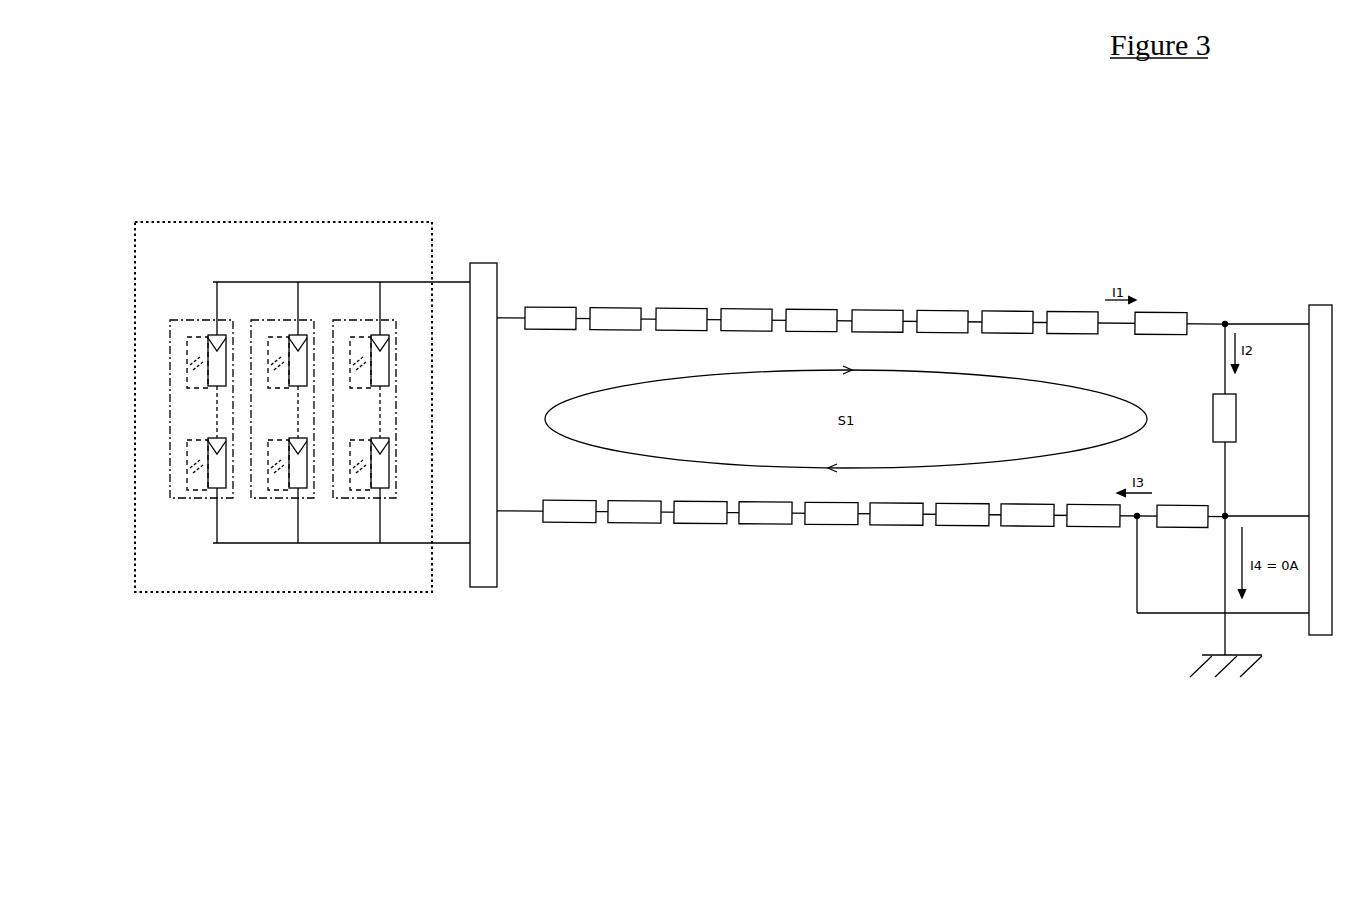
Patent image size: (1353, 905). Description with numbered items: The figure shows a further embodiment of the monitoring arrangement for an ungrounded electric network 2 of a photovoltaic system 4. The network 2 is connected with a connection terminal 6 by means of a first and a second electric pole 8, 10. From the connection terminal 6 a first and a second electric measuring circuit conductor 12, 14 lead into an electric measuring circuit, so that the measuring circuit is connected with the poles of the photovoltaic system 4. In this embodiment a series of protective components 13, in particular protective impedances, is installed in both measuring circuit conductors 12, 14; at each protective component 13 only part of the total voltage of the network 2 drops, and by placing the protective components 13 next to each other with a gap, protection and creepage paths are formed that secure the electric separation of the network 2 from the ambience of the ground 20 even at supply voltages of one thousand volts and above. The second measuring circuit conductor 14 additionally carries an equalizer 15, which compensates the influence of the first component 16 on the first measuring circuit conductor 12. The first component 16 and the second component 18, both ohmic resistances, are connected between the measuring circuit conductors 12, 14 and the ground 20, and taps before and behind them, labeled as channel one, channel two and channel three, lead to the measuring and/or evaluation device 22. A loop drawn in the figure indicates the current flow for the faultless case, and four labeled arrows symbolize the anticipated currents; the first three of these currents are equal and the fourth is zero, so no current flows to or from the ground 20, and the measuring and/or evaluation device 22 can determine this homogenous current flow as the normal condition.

The ungrounded electric network 2 is at (283, 348).
The photovoltaic system 4 is at (343, 300).
The connection terminal 6 is at (482, 263).
The first electric pole 8 is at (452, 547).
The second electric pole 10 is at (445, 282).
The first electric measuring circuit conductor 12 is at (528, 512).
The protective components 13 is at (549, 307).
The second electric measuring circuit conductor 14 is at (515, 312).
The equalizer 15 is at (1157, 311).
The first component 16 is at (1178, 527).
The second component 18 is at (1213, 400).
The ground 20 is at (1212, 658).
The measuring and/or evaluation device 22 is at (1318, 305).